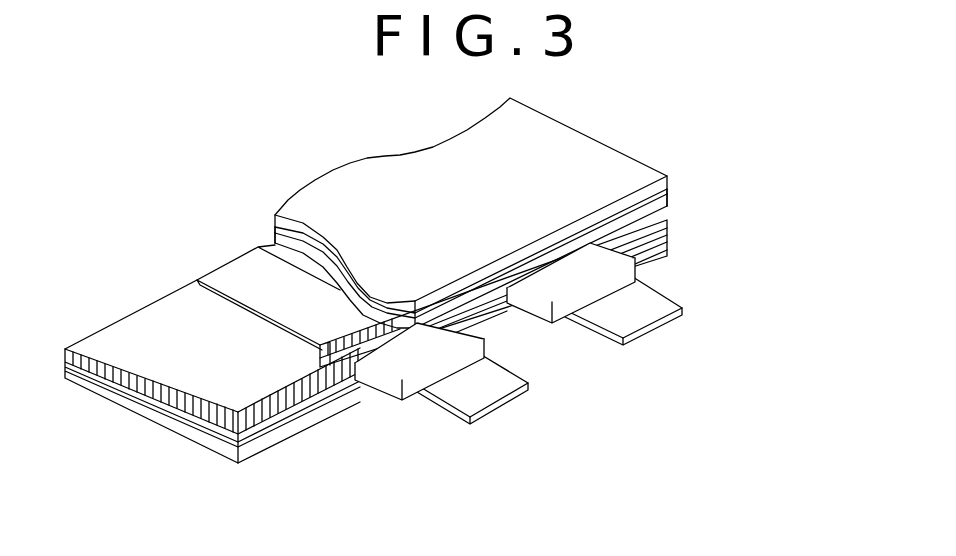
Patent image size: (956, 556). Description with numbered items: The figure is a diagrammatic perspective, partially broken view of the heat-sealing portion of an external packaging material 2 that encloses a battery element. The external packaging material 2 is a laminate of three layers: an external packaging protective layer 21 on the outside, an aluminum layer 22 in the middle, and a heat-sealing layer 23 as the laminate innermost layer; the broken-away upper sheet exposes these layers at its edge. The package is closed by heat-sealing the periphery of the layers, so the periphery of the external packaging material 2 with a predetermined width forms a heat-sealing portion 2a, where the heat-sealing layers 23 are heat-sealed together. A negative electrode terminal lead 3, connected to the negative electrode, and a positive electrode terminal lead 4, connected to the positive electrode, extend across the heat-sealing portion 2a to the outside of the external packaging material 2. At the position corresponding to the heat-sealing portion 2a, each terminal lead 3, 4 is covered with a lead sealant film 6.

The external packaging material 2 is at (766, 156).
The heat-sealing portion 2a is at (160, 392).
The external packaging protective layer 21 is at (669, 178).
The aluminum layer 22 is at (669, 191).
The heat-sealing layer 23 is at (669, 206).
The negative electrode terminal lead 3 is at (492, 392).
The positive electrode terminal lead 4 is at (642, 318).
The lead sealant film 6 is at (548, 293).